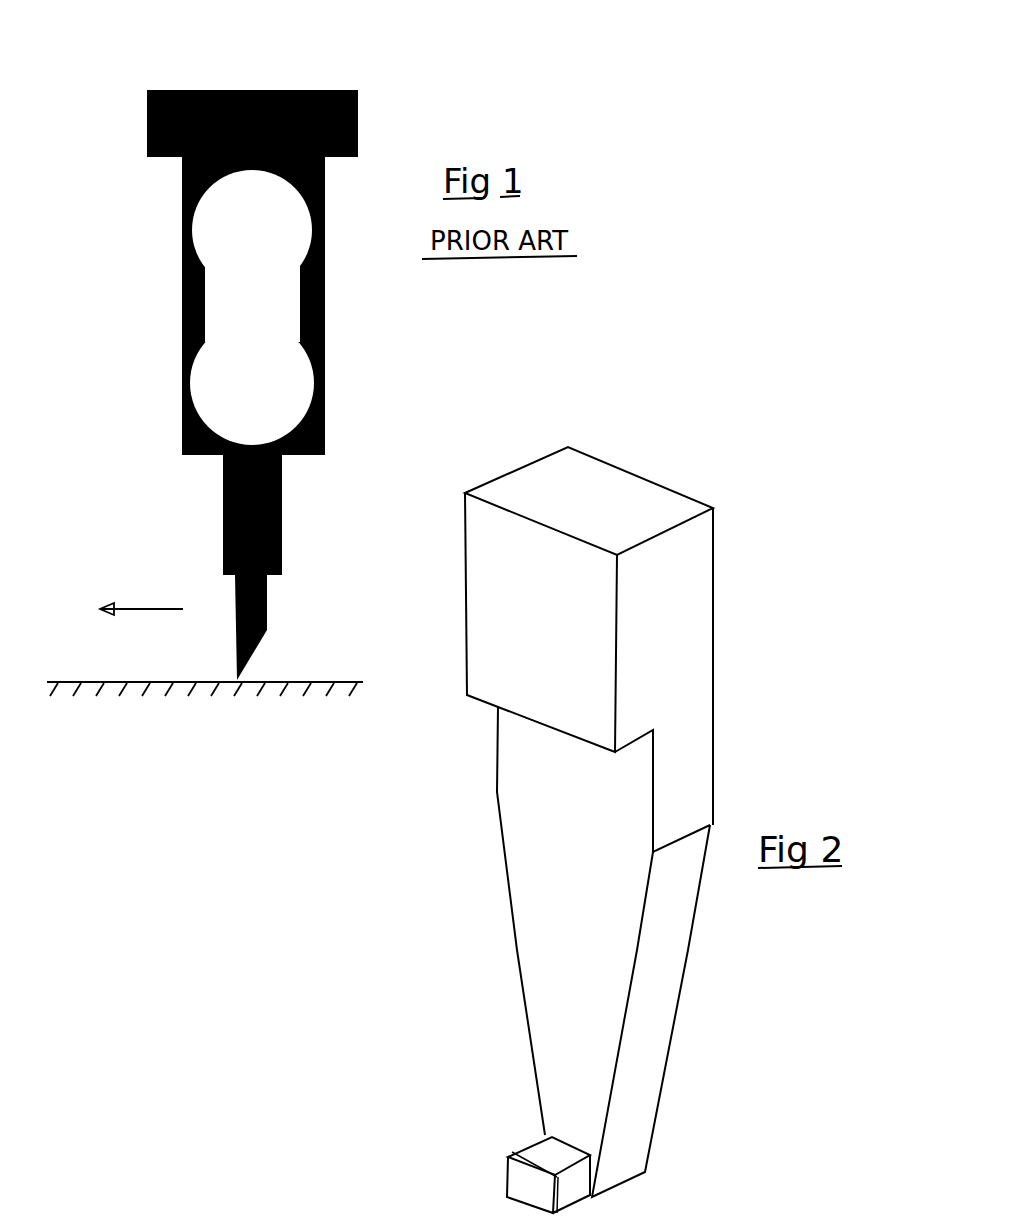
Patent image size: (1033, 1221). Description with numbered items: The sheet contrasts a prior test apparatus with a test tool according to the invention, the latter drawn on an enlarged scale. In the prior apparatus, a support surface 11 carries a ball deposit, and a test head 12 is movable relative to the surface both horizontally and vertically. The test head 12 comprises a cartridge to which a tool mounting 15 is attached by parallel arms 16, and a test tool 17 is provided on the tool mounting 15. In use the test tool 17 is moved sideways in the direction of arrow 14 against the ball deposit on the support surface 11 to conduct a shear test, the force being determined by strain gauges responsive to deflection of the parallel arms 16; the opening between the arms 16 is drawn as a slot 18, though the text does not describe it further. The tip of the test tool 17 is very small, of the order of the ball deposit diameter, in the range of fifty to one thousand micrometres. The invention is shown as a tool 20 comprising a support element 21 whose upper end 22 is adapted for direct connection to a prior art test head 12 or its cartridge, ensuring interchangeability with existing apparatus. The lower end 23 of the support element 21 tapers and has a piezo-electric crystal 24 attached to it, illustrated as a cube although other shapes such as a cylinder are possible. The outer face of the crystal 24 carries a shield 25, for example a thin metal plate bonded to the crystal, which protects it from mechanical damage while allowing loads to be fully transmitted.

In FIG. 1, the support surface 11 is at (81, 681).
In FIG. 1, the test head 12 is at (239, 350).
In FIG. 1, the arrow 14 is at (149, 607).
In FIG. 1, the tool mounting 15 is at (225, 509).
In FIG. 1, the parallel arms 16 is at (186, 273).
In FIG. 1, the test tool 17 is at (265, 614).
In FIG. 1, the cavity 18 is at (202, 315).
In FIG. 2, the tool 20 is at (575, 830).
In FIG. 2, the support element 21 is at (692, 688).
In FIG. 2, the upper end 22 is at (693, 548).
In FIG. 2, the lower end 23 is at (630, 1157).
In FIG. 2, the piezo-electric crystal 24 is at (533, 1157).
In FIG. 2, the shield 25 is at (520, 1182).